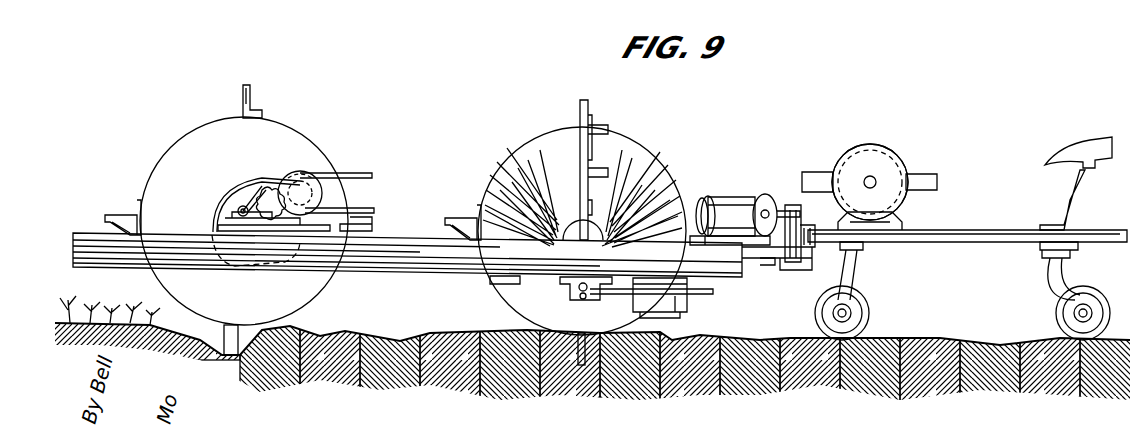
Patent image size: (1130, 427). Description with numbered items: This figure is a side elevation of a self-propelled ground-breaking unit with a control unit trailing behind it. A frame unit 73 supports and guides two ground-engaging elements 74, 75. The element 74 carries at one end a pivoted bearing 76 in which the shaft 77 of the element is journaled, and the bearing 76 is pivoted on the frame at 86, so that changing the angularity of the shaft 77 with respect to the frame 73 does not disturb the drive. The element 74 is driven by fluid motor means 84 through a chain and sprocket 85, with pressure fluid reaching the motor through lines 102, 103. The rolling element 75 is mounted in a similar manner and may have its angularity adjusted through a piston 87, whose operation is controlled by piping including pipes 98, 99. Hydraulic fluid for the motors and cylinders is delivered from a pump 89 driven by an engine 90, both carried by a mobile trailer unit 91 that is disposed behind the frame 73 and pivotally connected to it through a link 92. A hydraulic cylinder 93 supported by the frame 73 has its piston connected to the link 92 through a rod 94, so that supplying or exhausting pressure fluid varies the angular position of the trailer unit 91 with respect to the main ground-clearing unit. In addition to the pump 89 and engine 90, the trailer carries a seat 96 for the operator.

The frame unit 73 is at (404, 247).
The ground-engaging element 74 is at (282, 150).
The rolling element 75 is at (628, 156).
The pivoted bearing 76 is at (262, 205).
The shaft 77 is at (244, 206).
The fluid motor means 84 is at (304, 178).
The chain and sprocket 85 is at (212, 210).
The pivot of bearing on frame 86 is at (214, 262).
The piston 87 is at (660, 302).
The pump 89 is at (907, 160).
The engine 90 is at (890, 150).
The mobile trailer unit 91 is at (985, 244).
The link 92 is at (808, 262).
The hydraulic cylinder 93 is at (729, 200).
The rod 94 is at (769, 210).
The seat 96 is at (1078, 152).
The pipe 98 is at (712, 298).
The pipe 99 is at (713, 291).
The line 102 is at (374, 209).
The line 103 is at (372, 175).